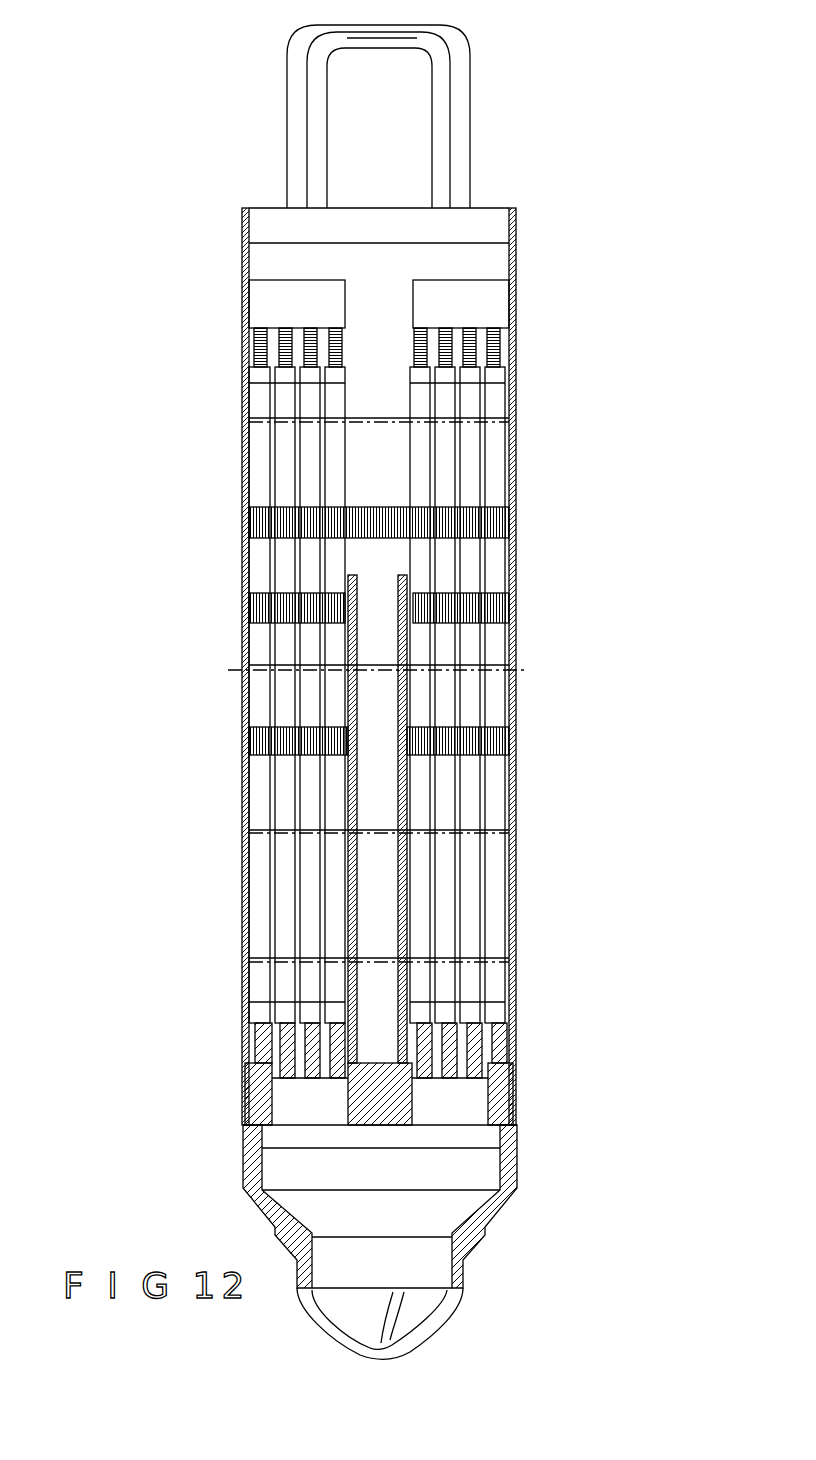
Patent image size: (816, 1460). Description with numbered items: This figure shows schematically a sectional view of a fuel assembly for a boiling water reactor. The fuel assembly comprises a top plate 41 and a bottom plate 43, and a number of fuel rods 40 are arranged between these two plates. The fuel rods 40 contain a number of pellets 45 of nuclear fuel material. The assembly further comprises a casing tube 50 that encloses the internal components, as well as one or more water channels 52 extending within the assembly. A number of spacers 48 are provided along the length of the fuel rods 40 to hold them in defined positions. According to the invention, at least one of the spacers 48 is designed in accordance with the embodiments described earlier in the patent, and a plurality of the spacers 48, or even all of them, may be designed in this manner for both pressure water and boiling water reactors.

The fuel rods 40 is at (340, 873).
The top plate 41 is at (277, 304).
The bottom plate 43 is at (517, 1113).
The pellets 45 is at (263, 992).
The spacers 48 is at (246, 740).
The casing tube 50 is at (516, 870).
The water channels 52 is at (407, 805).